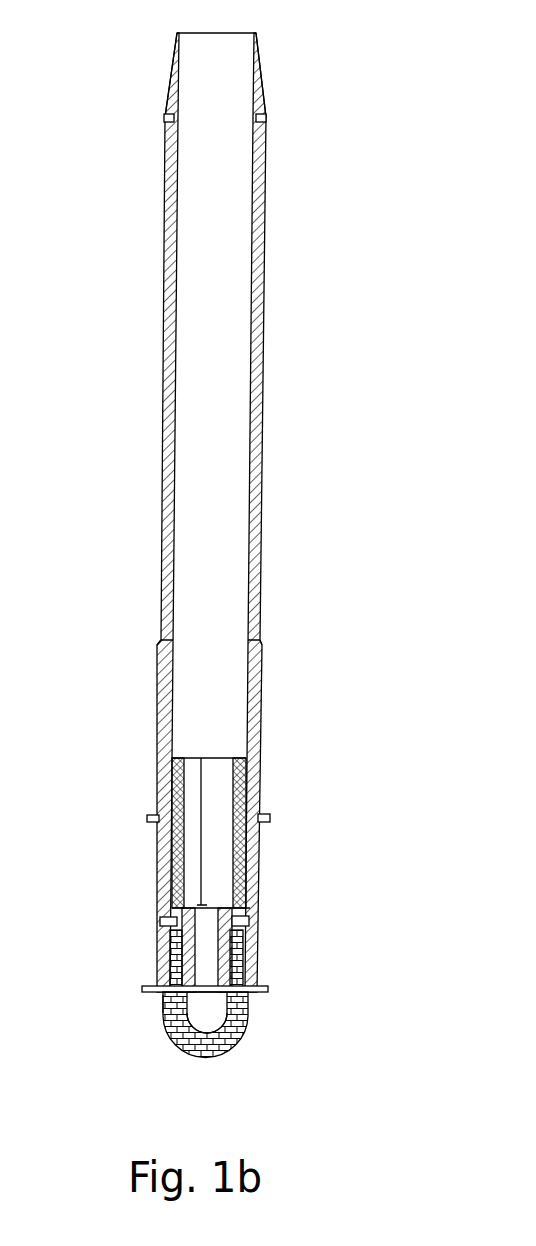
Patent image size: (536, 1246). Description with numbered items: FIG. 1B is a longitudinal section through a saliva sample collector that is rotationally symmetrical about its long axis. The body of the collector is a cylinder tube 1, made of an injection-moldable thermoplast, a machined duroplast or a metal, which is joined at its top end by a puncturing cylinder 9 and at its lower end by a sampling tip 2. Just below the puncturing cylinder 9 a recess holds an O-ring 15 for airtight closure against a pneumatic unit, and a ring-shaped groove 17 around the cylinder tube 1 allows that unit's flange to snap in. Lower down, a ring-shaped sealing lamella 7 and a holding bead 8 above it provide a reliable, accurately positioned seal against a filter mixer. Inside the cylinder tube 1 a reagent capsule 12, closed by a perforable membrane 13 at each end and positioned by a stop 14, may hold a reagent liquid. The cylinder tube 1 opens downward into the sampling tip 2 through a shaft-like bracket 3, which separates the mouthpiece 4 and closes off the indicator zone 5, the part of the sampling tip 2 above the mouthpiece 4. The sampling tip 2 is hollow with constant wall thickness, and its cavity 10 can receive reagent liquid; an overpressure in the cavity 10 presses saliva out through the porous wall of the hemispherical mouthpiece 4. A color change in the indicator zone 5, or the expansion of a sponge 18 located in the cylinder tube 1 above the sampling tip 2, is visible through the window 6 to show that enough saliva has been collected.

The cylinder tube 1 is at (163, 403).
The sampling tip 2 is at (172, 1013).
The bracket 3 is at (160, 952).
The mouthpiece 4 is at (167, 1023).
The indicator zone 5 is at (258, 940).
The window 6 is at (258, 960).
The sealing lamella 7 is at (258, 988).
The holding bead 8 is at (147, 820).
The puncturing cylinder 9 is at (170, 60).
The cavity 10 is at (237, 1030).
The reagent capsule 12 is at (246, 777).
The membrane 13 is at (213, 758).
The stop 14 is at (250, 893).
The O-ring 15 is at (165, 120).
The groove 17 is at (258, 643).
The sponge 18 is at (158, 912).